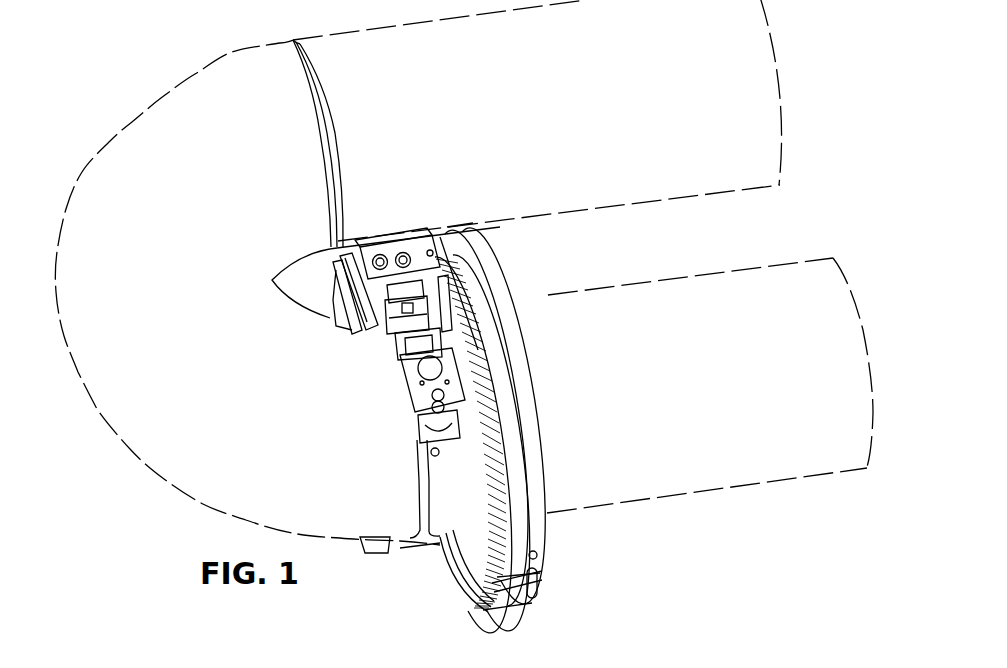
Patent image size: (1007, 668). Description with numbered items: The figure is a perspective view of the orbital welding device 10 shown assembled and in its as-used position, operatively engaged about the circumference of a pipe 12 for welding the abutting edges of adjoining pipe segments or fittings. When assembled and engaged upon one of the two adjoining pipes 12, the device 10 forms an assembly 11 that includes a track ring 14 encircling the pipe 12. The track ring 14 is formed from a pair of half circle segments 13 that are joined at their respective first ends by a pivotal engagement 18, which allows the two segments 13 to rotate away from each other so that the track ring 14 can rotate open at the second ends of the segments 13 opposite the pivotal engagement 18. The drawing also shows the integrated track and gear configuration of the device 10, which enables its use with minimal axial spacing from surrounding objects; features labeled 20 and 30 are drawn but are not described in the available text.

The orbital welding device 10 is at (585, 558).
The assembly 11 is at (513, 313).
The pipe 12 is at (182, 118).
The segments 13 is at (537, 535).
The track ring 14 is at (528, 422).
The pivotal engagement 18 is at (540, 580).
The fastener 20 is at (552, 620).
The liner 30 is at (515, 493).